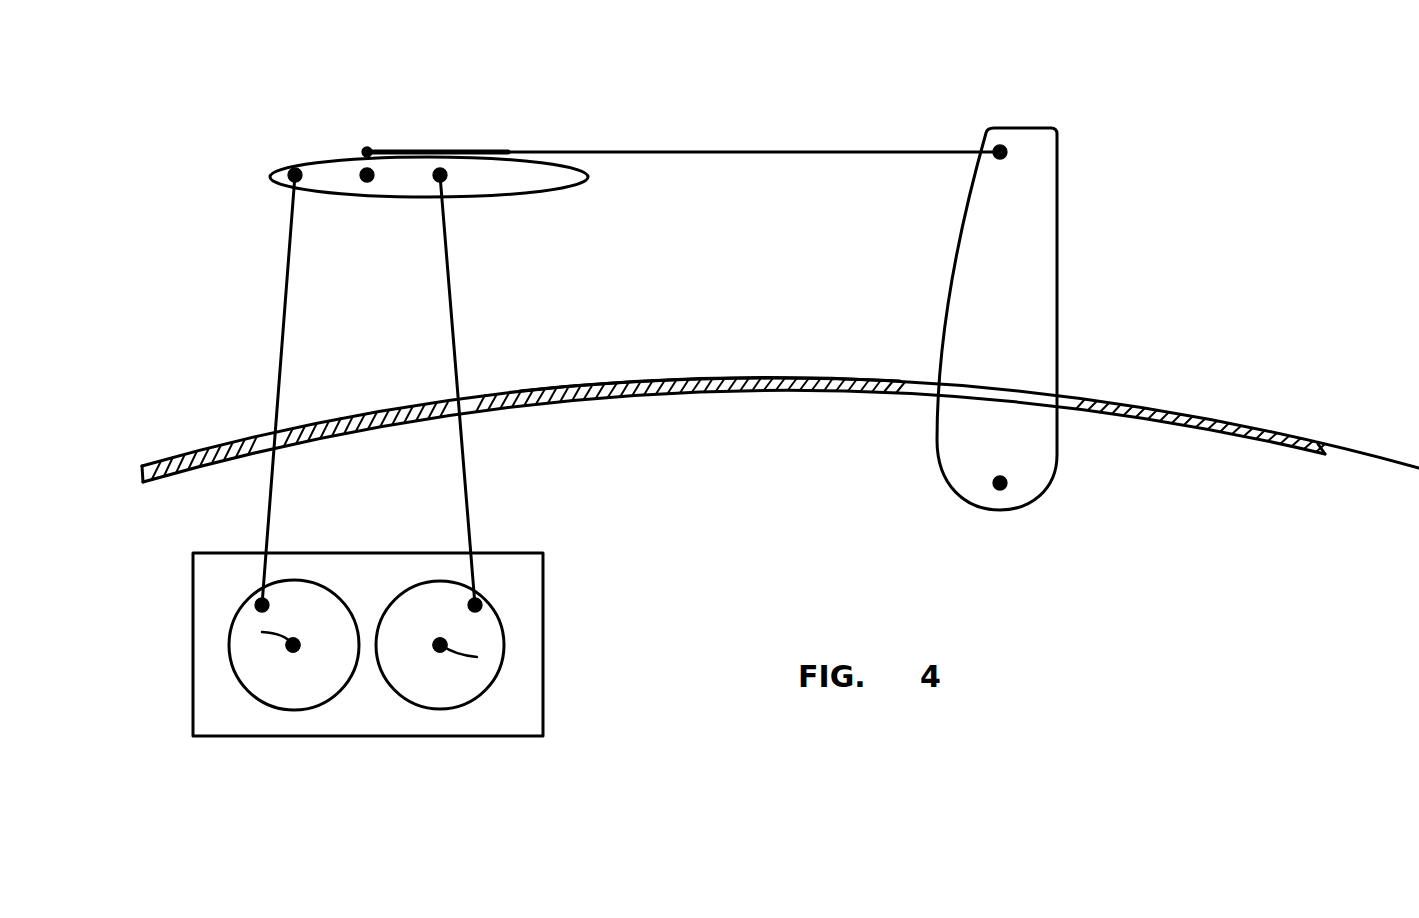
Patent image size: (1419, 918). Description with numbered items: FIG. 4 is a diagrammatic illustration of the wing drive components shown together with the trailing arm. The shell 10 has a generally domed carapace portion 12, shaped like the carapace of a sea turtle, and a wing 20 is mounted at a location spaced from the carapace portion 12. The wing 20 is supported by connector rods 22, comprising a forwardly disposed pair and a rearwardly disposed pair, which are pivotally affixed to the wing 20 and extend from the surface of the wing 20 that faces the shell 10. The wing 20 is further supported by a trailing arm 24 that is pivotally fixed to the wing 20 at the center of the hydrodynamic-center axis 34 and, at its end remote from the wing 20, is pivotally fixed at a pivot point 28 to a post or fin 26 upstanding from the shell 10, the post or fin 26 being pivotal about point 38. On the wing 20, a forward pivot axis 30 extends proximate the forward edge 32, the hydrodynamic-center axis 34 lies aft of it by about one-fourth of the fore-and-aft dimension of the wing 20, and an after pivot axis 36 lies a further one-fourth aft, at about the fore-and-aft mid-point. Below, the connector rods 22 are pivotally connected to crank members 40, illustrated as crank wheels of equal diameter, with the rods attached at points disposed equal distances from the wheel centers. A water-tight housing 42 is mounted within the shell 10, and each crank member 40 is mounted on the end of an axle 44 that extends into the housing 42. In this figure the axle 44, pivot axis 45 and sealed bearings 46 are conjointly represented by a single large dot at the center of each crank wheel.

The shell 10 is at (1143, 400).
The carapace portion 12 is at (702, 375).
The wing 20 is at (508, 158).
The connector rods 22 is at (277, 378).
The trailing arm 24 is at (770, 150).
The post or fin 26 is at (1053, 208).
The pivot point 28 is at (1000, 148).
The forward pivot axis 30 is at (296, 168).
The forward edge 32 is at (272, 177).
The hydrodynamic-center axis 34 is at (366, 175).
The after pivot axis 36 is at (440, 172).
The pivot point of post 38 is at (1000, 488).
The crank members 40 is at (273, 710).
The water-tight housing 42 is at (543, 553).
The axle 44 is at (293, 648).
The pivot axis 45 is at (366, 645).
The sealed bearings 46 is at (262, 632).